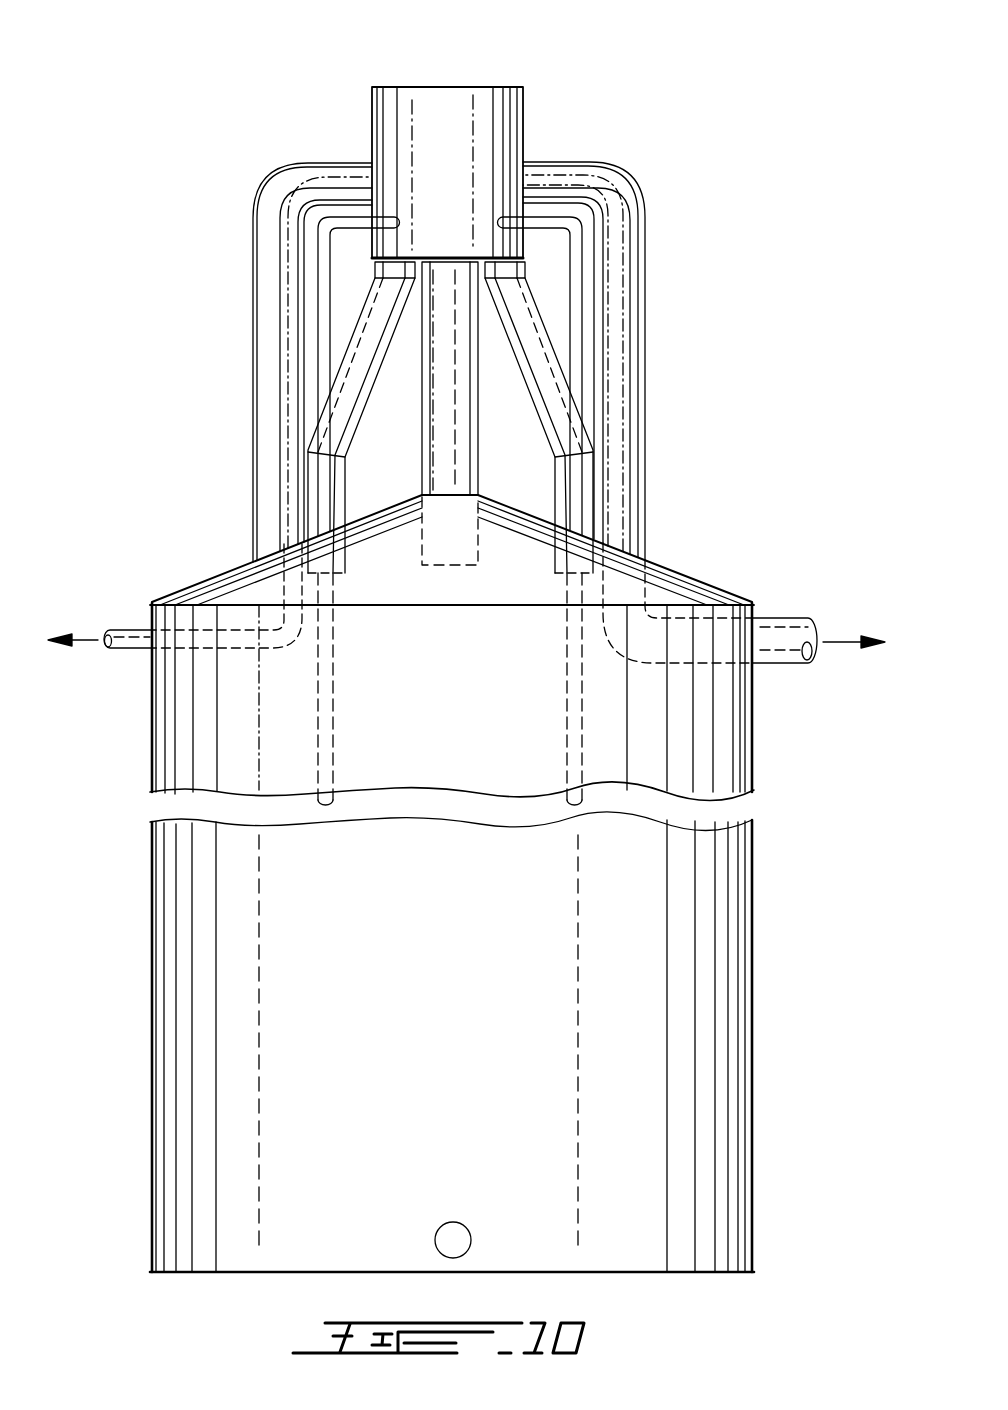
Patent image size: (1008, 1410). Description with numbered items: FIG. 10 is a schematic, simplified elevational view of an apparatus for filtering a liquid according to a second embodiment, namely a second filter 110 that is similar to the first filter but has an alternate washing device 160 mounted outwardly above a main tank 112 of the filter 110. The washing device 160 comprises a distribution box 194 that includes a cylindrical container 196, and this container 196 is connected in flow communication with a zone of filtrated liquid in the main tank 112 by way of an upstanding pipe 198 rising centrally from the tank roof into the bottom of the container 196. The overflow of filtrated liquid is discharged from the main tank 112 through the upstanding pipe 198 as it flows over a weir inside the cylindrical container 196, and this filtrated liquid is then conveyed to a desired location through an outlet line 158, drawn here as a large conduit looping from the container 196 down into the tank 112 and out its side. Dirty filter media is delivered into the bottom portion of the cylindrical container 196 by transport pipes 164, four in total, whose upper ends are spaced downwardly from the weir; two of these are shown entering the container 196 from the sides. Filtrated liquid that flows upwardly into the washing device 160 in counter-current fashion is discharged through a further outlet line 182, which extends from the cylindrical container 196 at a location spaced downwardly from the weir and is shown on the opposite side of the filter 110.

The second filter 110 is at (808, 1006).
The main tank 112 is at (652, 898).
The outlet line 158 is at (623, 258).
The washing device 160 is at (536, 119).
The transport pipes 164 is at (323, 275).
The outlet line 182 is at (290, 183).
The distribution box 194 is at (404, 80).
The cylindrical container 196 is at (462, 118).
The upstanding pipe 198 is at (440, 440).